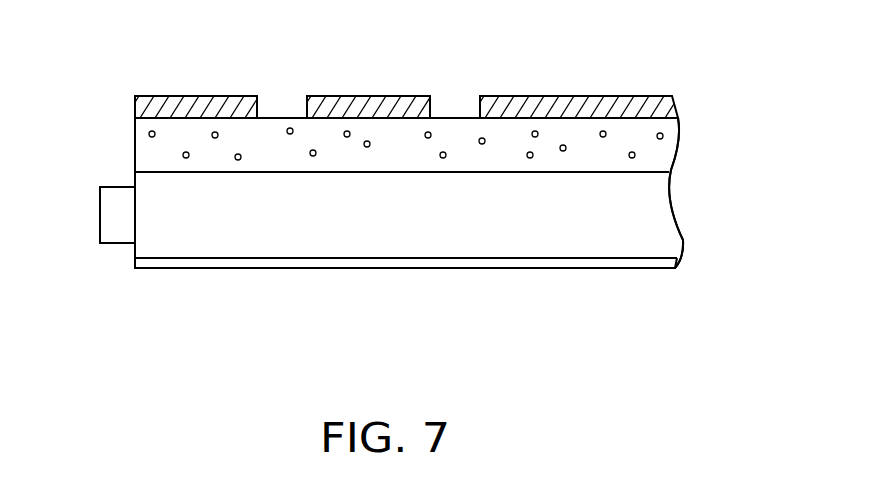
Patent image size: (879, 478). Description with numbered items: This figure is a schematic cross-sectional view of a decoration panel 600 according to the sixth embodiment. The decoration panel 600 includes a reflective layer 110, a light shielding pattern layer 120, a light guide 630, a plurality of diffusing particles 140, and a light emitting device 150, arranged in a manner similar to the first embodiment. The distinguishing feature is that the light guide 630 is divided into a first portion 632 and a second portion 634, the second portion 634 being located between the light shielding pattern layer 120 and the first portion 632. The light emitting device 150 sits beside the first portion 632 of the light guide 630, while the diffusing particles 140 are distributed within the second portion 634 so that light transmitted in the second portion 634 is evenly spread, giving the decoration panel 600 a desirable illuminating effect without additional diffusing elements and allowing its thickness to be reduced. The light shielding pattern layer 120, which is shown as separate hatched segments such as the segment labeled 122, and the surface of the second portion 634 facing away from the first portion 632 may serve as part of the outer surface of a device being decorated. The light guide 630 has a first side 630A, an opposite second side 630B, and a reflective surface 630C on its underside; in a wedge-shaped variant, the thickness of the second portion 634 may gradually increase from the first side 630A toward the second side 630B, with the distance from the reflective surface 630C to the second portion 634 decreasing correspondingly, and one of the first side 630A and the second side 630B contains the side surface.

The reflective layer 110 is at (496, 262).
The light shielding pattern layer 120 is at (195, 103).
The conductive pattern sidewall 122 is at (434, 108).
The diffusing particles 140 is at (539, 134).
The light emitting device 150 is at (118, 215).
The decoration panel 600 is at (725, 340).
The light guide 630 is at (764, 133).
The first side 630A is at (131, 152).
The second side 630B is at (682, 128).
The reflective surface 630C is at (292, 262).
The first portion 632 is at (660, 233).
The second portion 634 is at (658, 158).